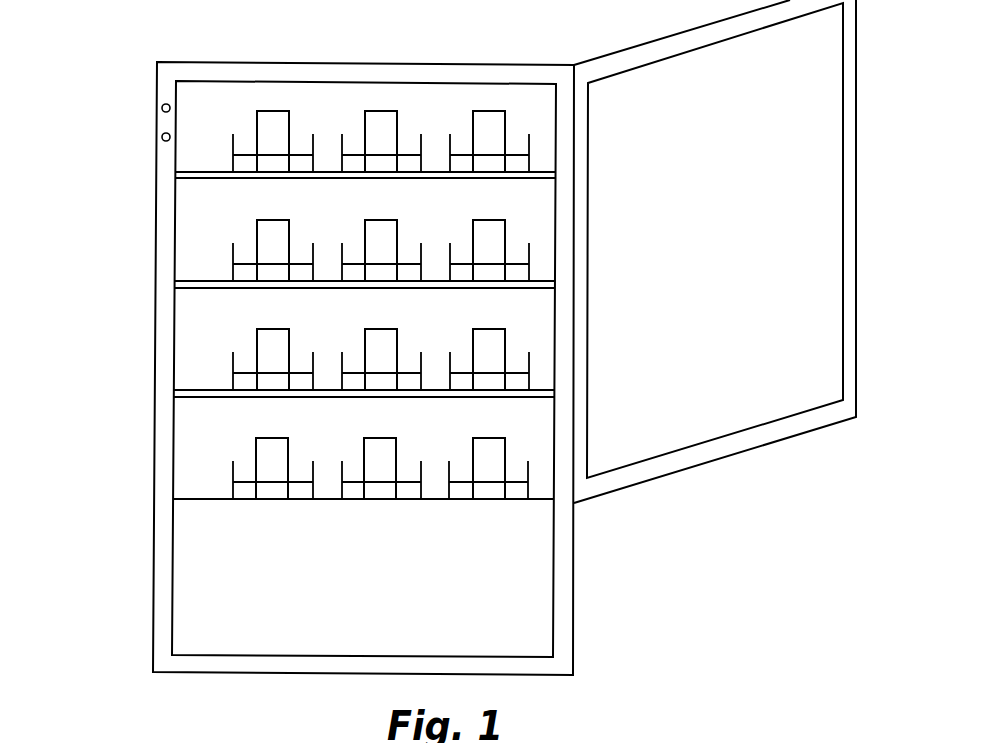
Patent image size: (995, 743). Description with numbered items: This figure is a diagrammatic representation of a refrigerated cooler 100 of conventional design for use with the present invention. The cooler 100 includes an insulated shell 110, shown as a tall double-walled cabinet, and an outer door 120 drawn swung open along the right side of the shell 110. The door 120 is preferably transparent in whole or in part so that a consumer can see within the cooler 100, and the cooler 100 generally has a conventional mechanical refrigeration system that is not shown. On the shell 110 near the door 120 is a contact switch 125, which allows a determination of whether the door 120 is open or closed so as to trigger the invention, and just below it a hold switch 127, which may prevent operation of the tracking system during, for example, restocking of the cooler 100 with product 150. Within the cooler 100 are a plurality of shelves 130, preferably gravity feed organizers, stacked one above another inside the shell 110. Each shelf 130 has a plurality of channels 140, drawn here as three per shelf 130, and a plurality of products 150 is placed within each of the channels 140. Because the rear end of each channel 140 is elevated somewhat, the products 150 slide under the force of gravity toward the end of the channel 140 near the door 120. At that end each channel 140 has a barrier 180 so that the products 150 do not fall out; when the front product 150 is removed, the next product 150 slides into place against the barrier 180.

The refrigerated cooler 100 is at (115, 98).
The insulated shell 110 is at (153, 383).
The outer door 120 is at (856, 319).
The contact switch 125 is at (162, 105).
The hold switch 127 is at (157, 137).
The shelf 130 is at (195, 179).
The channel 140 is at (282, 180).
The product 150 is at (282, 110).
The barrier 180 is at (250, 153).